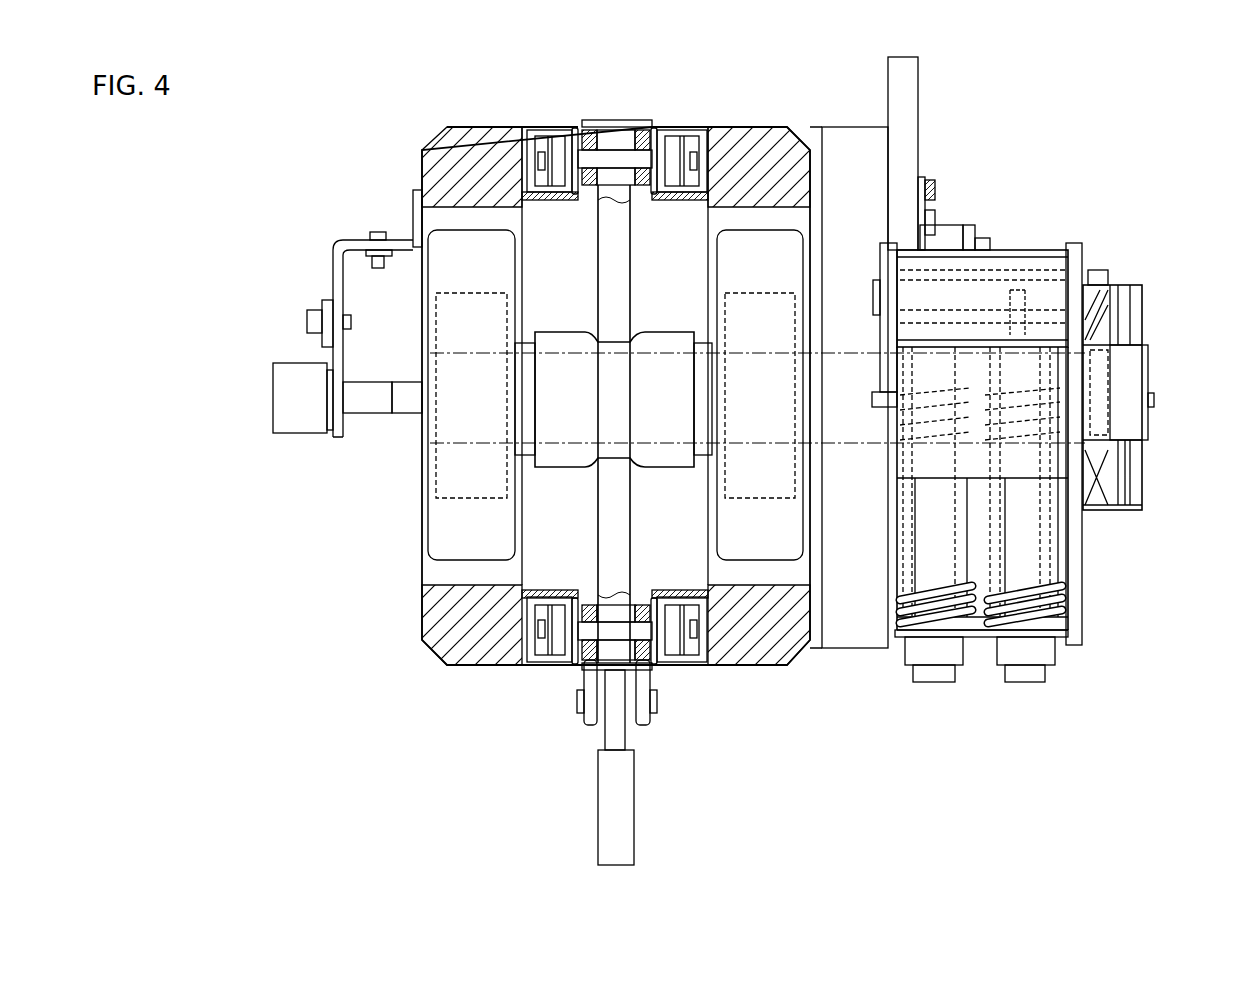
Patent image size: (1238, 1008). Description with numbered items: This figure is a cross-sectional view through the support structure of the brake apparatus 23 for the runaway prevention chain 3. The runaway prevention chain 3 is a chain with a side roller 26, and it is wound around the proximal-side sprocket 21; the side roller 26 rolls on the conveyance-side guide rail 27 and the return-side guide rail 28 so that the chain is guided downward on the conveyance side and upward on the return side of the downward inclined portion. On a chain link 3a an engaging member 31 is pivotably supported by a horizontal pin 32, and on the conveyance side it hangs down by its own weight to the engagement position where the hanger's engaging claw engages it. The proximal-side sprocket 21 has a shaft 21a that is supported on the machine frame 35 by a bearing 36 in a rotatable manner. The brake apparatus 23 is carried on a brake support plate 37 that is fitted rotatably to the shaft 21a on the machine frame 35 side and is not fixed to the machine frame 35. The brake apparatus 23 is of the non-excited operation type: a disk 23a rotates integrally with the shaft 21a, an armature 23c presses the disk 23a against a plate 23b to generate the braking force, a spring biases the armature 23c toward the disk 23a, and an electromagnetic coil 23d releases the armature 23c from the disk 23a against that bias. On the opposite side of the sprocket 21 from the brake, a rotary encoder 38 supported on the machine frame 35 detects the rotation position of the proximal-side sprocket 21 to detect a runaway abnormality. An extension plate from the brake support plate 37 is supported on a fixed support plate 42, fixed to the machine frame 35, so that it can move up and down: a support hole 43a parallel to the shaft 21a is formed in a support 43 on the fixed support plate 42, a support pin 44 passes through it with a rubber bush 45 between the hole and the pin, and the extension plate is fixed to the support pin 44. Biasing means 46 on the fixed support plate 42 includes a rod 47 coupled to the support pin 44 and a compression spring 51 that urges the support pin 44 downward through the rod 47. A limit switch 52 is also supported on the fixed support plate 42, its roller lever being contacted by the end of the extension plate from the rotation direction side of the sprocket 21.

The runaway prevention chain 3 is at (638, 120).
The chain link 3a is at (597, 130).
The proximal-side sprocket 21 is at (597, 248).
The shaft 21a is at (750, 355).
The brake apparatus 23 is at (1145, 313).
The disk 23a is at (1130, 512).
The plate 23b is at (1125, 285).
The armature 23c is at (1076, 265).
The electromagnetic coil 23d is at (1105, 512).
The side roller 26 is at (548, 132).
The conveyance-side guide rail 27 is at (530, 666).
The return-side guide rail 28 is at (680, 132).
The engaging member 31 is at (598, 802).
The horizontal pin 32 is at (580, 700).
The machine frame 35 is at (446, 130).
The bearing 36 is at (437, 529).
The brake support plate 37 is at (1075, 648).
The rotary encoder 38 is at (302, 436).
The fixed support plate 42 is at (848, 133).
The support 43 is at (940, 250).
The support hole 43a is at (1010, 290).
The support pin 44 is at (1040, 270).
The rubber bush 45 is at (982, 280).
The biasing means 46 is at (903, 695).
The rod 47 is at (920, 531).
The compression spring 51 is at (1066, 585).
The limit switch 52 is at (947, 250).